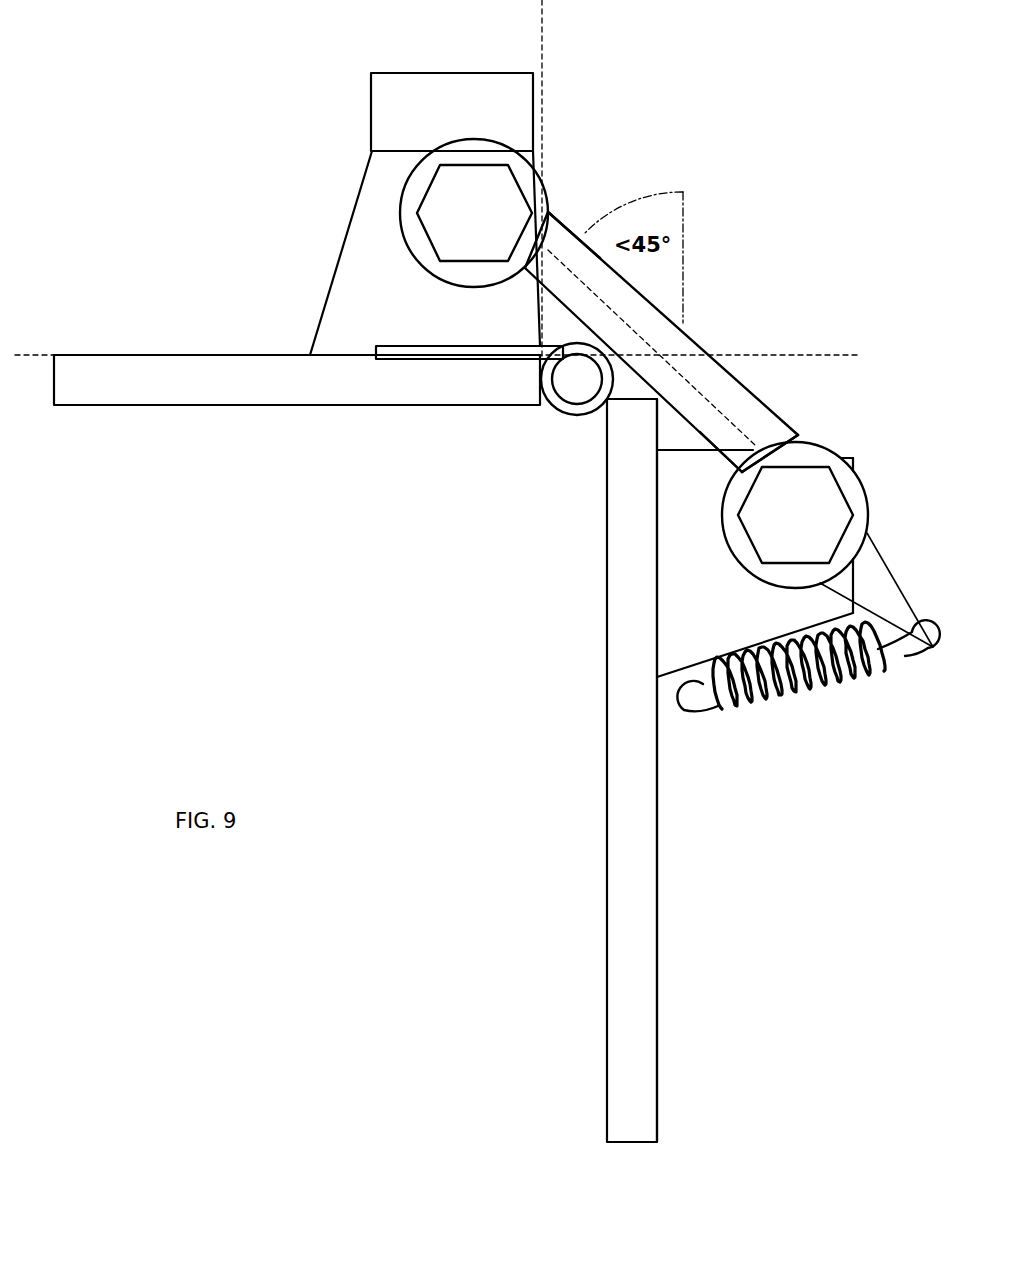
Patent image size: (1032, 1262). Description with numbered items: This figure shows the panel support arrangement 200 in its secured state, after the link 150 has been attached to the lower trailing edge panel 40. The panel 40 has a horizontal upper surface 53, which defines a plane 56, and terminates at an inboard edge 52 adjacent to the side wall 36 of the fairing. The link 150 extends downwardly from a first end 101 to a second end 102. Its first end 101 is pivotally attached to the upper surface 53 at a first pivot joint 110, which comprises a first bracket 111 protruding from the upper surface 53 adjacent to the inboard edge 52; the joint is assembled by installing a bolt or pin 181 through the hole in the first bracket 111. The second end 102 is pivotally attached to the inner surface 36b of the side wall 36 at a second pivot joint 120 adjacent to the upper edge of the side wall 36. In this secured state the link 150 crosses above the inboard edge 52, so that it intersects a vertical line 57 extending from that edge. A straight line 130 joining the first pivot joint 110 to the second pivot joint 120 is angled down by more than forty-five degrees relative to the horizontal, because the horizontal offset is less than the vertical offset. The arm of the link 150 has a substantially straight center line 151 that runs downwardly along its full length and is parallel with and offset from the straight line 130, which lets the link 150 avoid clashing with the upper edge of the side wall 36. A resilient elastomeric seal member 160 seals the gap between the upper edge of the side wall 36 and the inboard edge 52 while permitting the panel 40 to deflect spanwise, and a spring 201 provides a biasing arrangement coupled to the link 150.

The side wall 36 is at (622, 932).
The inner surface 36b is at (657, 972).
The first lower trailing edge panel 40 is at (184, 372).
The inboard edge 52 is at (540, 379).
The upper surface 53 is at (124, 352).
The plane 56 is at (823, 358).
The vertical line 57 is at (548, 29).
The first end 101 is at (562, 204).
The second end 102 is at (710, 482).
The first pivot joint 110 is at (446, 212).
The first bracket 111 is at (365, 295).
The second pivot joint 120 is at (778, 520).
The straight line 130 is at (723, 445).
The link 150 is at (730, 390).
The center line 151 is at (677, 372).
The resilient elastomeric seal member 160 is at (570, 417).
The bolt or pin 181 is at (430, 181).
The panel support arrangement 200 is at (752, 160).
The spring 201 is at (787, 697).